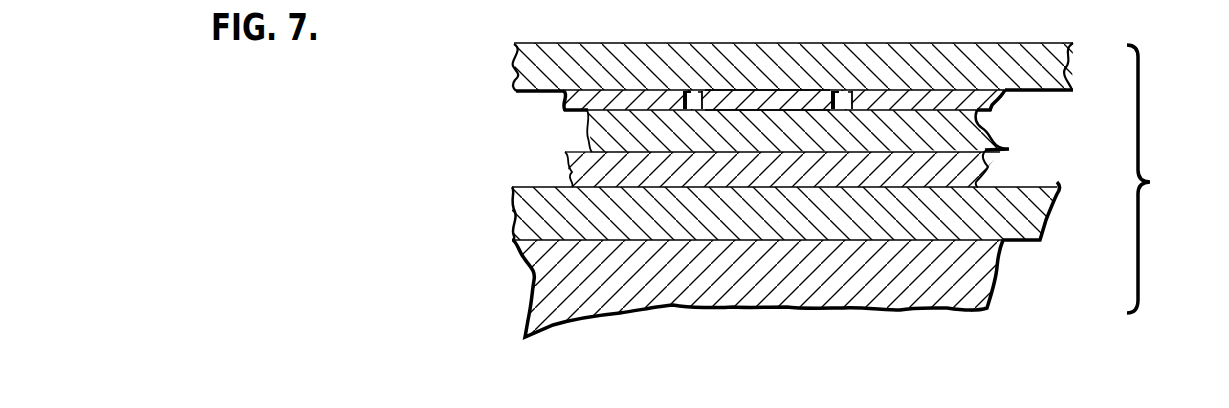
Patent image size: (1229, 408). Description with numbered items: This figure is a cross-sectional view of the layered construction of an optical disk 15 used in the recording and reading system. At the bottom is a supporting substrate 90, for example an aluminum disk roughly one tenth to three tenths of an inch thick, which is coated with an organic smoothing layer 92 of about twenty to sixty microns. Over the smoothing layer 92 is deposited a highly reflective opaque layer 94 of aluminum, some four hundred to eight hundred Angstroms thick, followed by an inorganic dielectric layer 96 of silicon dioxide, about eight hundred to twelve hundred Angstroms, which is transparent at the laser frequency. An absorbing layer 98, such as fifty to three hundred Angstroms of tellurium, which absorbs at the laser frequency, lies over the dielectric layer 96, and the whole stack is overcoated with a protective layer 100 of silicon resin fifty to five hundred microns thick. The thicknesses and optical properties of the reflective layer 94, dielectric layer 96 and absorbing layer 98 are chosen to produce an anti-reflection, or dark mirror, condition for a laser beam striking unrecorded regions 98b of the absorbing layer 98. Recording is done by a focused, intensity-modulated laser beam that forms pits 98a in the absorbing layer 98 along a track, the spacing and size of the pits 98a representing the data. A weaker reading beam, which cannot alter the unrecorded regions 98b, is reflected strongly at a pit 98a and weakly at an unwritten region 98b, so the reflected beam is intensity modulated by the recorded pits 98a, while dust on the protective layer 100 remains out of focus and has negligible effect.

The disk 15 is at (1175, 179).
The supporting substrate 90 is at (983, 273).
The organic smoothing layer 92 is at (516, 217).
The reflective opaque layer 94 is at (989, 167).
The inorganic dielectric layer 96 is at (592, 135).
The absorbing layer 98 is at (998, 97).
The pits 98a is at (843, 97).
The unrecorded regions 98b is at (770, 90).
The protective layer 100 is at (520, 70).